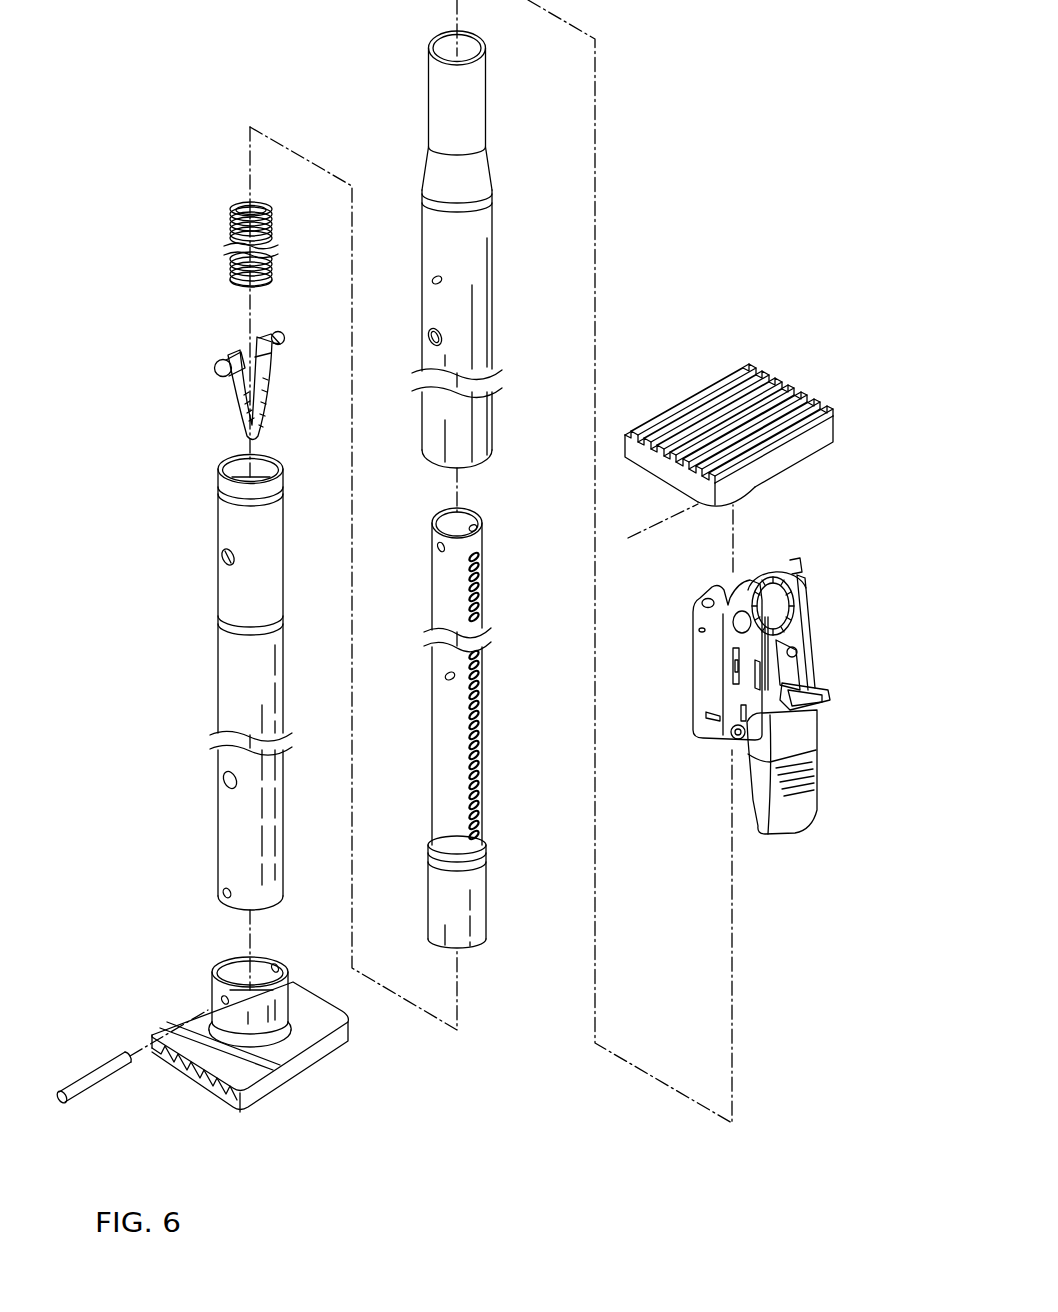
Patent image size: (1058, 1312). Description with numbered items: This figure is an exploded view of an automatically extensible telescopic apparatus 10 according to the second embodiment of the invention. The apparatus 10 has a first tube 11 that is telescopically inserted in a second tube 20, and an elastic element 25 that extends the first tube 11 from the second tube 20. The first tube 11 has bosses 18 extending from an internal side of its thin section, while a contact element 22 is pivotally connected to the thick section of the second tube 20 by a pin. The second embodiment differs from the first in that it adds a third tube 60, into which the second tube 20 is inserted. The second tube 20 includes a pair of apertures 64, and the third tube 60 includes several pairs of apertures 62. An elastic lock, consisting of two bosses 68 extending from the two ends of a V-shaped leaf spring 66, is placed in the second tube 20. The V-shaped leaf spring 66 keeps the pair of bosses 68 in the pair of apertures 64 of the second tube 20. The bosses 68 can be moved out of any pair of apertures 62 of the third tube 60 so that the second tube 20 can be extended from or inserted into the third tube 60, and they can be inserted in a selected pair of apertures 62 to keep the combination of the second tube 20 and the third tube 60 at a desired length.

The automatically extensible telescopic apparatus 10 is at (612, 178).
The first tube 11 is at (452, 733).
The bosses 18 is at (433, 279).
The second tube 20 is at (480, 305).
The contact element 22 is at (310, 1037).
The elastic element 25 is at (273, 233).
The third tube 60 is at (228, 647).
The apertures 62 is at (222, 555).
The apertures 64 is at (430, 336).
The V-shaped leaf spring 66 is at (232, 402).
The bosses 68 is at (214, 370).